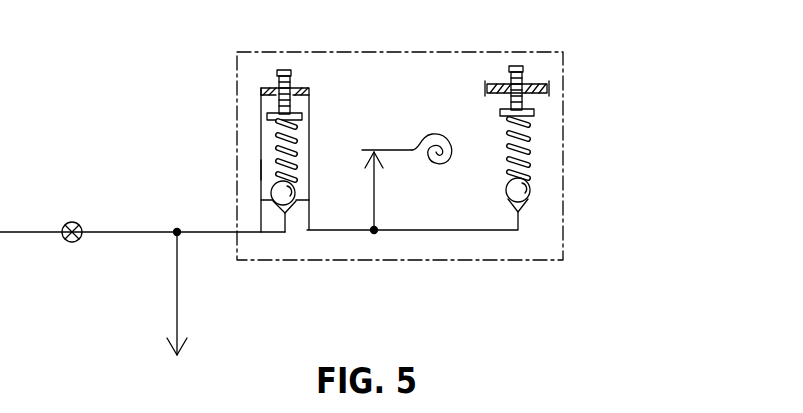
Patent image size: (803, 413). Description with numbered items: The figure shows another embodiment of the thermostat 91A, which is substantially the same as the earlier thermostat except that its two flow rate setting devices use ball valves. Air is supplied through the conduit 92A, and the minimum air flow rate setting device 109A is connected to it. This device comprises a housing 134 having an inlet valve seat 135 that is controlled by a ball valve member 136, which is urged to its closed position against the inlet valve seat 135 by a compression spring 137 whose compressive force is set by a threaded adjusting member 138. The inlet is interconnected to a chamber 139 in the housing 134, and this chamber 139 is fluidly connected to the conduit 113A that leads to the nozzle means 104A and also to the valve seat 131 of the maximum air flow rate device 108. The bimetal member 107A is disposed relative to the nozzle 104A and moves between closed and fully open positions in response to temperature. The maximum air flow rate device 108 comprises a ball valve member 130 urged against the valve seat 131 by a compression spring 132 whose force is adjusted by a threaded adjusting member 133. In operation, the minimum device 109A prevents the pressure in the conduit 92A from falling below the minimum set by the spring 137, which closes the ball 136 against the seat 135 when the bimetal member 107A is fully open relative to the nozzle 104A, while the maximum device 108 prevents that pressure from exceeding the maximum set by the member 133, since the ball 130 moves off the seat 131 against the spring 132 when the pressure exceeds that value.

The thermostat 91A is at (582, 91).
The conduit 92A is at (177, 298).
The nozzle means 104A is at (374, 185).
The bimetal member 107A is at (394, 150).
The maximum air flow rate device 108 is at (513, 127).
The minimum air flow rate setting device 109A is at (251, 144).
The conduit 113A is at (345, 232).
The ball valve member 130 is at (531, 182).
The valve seat 131 is at (527, 201).
The compression spring 132 is at (530, 165).
The threaded adjusting member 133 is at (530, 72).
The housing 134 is at (308, 128).
The inlet valve seat 135 is at (297, 208).
The ball valve member 136 is at (271, 186).
The compression spring 137 is at (275, 147).
The threaded adjusting member 138 is at (293, 82).
The chamber 139 is at (270, 170).